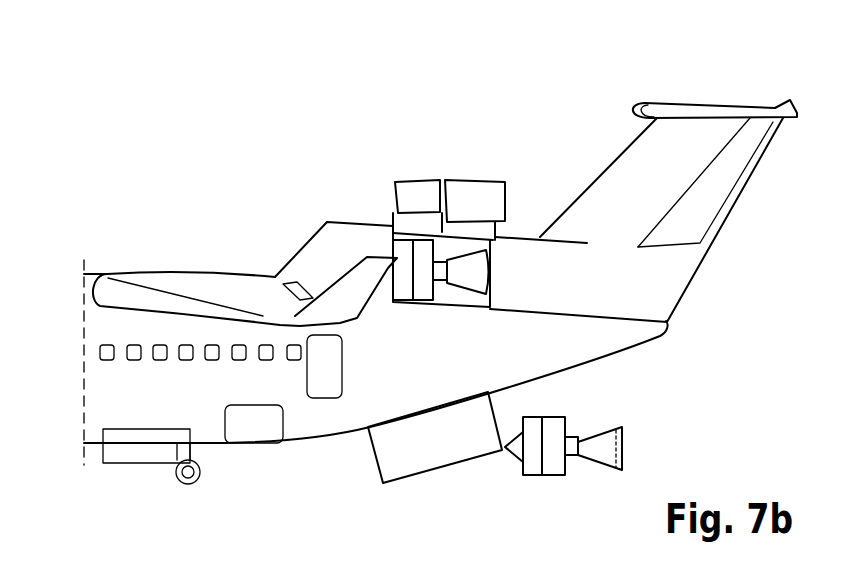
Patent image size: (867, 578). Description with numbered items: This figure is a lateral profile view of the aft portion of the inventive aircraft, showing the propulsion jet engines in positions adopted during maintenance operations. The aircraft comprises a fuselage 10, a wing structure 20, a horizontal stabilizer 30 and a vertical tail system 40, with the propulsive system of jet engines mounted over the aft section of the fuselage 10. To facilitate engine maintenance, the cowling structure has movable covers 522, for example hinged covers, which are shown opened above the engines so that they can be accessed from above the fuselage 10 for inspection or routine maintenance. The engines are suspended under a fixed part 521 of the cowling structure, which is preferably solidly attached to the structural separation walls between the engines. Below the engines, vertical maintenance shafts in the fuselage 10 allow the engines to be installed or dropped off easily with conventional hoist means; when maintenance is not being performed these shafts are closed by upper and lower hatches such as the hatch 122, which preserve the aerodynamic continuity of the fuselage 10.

The fuselage 10 is at (115, 470).
The wing structure 20 is at (178, 265).
The horizontal stabilizer 30 is at (693, 105).
The vertical tail system 40 is at (717, 267).
The fixed part of the cowling structure 521 is at (348, 237).
The movable covers 522 is at (473, 190).
The hatch 122 is at (417, 462).